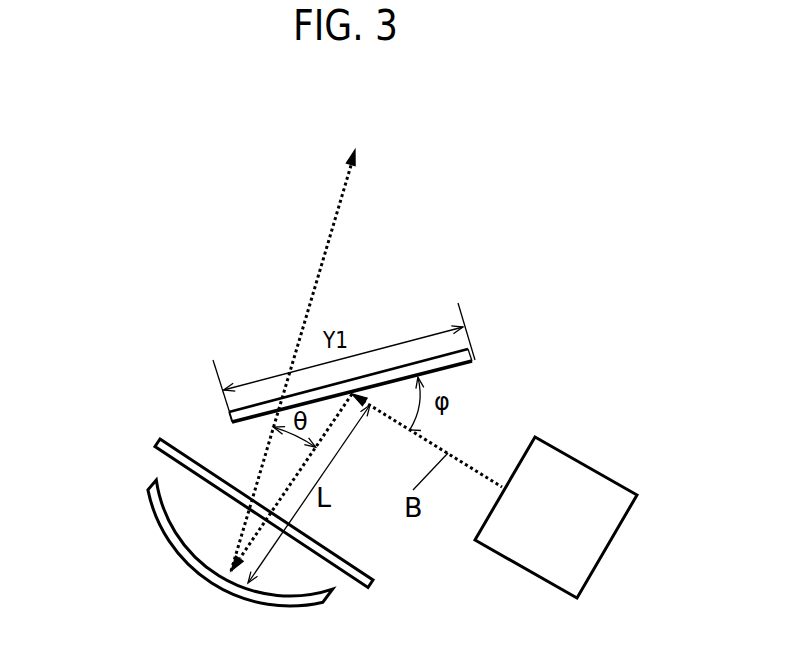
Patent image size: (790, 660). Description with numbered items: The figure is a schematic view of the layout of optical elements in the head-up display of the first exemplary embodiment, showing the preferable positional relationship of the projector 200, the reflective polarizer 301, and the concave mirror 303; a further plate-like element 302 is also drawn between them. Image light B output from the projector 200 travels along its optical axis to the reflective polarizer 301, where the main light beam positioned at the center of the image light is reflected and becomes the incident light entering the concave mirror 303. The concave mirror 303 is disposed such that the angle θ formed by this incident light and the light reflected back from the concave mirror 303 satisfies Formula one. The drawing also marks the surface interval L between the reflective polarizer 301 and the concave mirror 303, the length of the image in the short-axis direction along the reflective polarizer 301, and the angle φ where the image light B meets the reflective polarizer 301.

The projector 200 is at (587, 465).
The reflective polarizer 301 is at (477, 360).
The plate / beam splitter 302 is at (157, 442).
The concave mirror 303 is at (160, 530).